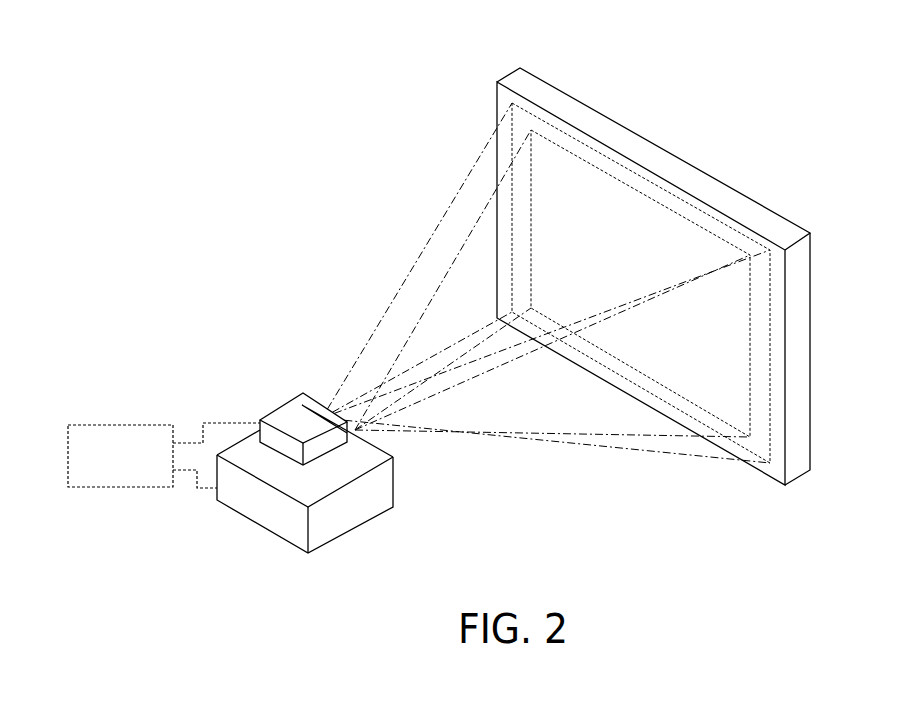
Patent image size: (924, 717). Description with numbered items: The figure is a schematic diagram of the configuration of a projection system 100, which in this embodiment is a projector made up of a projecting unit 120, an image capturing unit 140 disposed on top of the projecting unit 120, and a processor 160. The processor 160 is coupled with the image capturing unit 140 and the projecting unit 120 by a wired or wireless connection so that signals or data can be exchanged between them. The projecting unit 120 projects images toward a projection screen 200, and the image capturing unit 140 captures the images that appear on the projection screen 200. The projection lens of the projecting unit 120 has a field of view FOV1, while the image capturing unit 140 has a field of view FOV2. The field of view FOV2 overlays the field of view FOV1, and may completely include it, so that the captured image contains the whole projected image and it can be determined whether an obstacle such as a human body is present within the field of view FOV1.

The projection system 100 is at (158, 266).
The projecting unit 120 is at (347, 508).
The image capturing unit 140 is at (283, 416).
The processor 160 is at (132, 425).
The projection screen 200 is at (800, 423).
The field of view of the projecting unit FOV1 is at (606, 172).
The field of view of the image capturing unit FOV2 is at (540, 118).